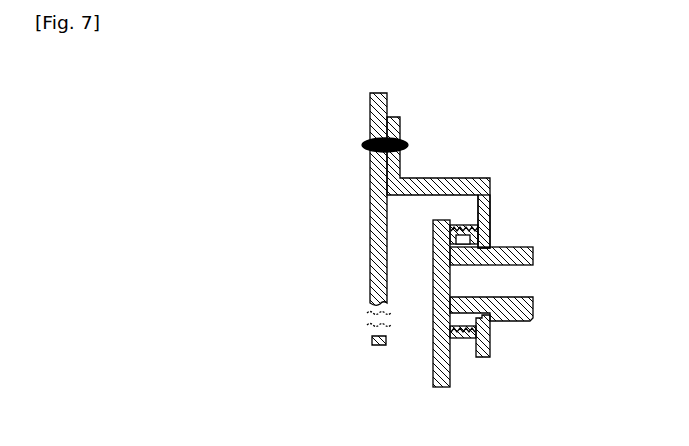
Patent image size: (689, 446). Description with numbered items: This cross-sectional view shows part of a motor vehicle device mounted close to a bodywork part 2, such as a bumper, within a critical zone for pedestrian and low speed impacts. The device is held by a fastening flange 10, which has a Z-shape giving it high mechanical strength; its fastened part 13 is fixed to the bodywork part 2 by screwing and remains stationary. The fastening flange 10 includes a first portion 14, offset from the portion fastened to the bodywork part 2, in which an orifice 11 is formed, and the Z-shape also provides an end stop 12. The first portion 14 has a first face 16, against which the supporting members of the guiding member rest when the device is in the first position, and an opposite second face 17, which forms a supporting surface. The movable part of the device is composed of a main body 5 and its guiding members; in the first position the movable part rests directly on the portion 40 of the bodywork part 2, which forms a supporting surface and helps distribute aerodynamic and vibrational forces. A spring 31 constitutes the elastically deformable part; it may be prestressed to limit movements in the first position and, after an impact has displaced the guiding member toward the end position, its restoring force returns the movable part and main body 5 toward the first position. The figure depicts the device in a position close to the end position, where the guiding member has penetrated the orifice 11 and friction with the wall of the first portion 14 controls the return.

The fastening flange 10 is at (460, 135).
The bodywork part 2 is at (372, 240).
The portion of the bodywork part forming a supporting surface 40 is at (364, 280).
The fastened part 13 is at (455, 180).
The first face 16 is at (435, 203).
The orifice 11 is at (504, 283).
The main body 5 is at (433, 355).
The end stop 12 is at (480, 239).
The first portion 14 is at (490, 330).
The second face 17 is at (497, 345).
The spring 31 is at (466, 360).